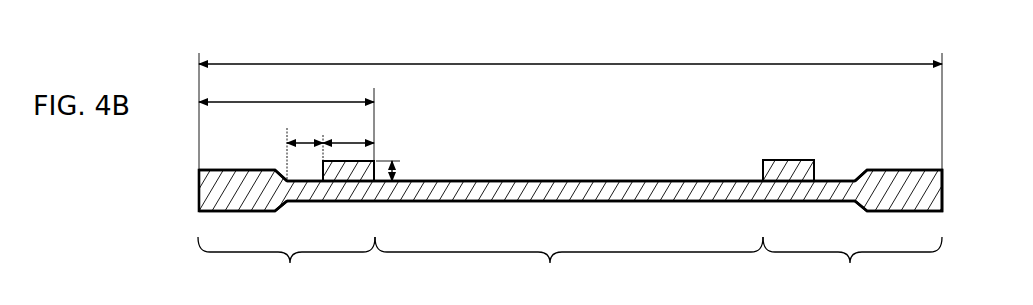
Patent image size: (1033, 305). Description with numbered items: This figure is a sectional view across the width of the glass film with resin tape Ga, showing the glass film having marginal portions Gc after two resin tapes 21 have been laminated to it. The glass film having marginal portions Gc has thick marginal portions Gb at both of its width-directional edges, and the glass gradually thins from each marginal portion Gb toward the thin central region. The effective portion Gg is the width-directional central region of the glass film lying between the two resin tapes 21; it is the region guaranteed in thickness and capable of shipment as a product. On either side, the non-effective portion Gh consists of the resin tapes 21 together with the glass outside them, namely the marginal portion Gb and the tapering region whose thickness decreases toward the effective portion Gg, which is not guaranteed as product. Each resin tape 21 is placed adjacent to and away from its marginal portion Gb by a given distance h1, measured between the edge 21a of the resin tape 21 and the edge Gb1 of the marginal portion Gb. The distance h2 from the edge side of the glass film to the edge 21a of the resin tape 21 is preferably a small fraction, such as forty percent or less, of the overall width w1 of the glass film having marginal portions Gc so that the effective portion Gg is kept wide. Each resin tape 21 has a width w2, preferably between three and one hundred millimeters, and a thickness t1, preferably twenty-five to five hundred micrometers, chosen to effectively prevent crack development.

The resin tape 21 is at (376, 160).
The edge of resin tape 21a is at (322, 166).
The glass film with resin tape Ga is at (198, 186).
The marginal portion Gb is at (901, 184).
The edge of marginal portion Gb1 is at (285, 179).
The glass film having marginal portions Gc is at (560, 190).
The effective portion Gg is at (569, 266).
The non-effective portion Gh is at (570, 266).
The width of glass film having marginal portions w1 is at (570, 102).
The distance between edge side and resin tape edge h2 is at (286, 117).
The distance between resin tape edge and marginal portion edge h1 is at (305, 149).
The width of resin tape w2 is at (348, 130).
The thickness of resin tape t1 is at (398, 168).